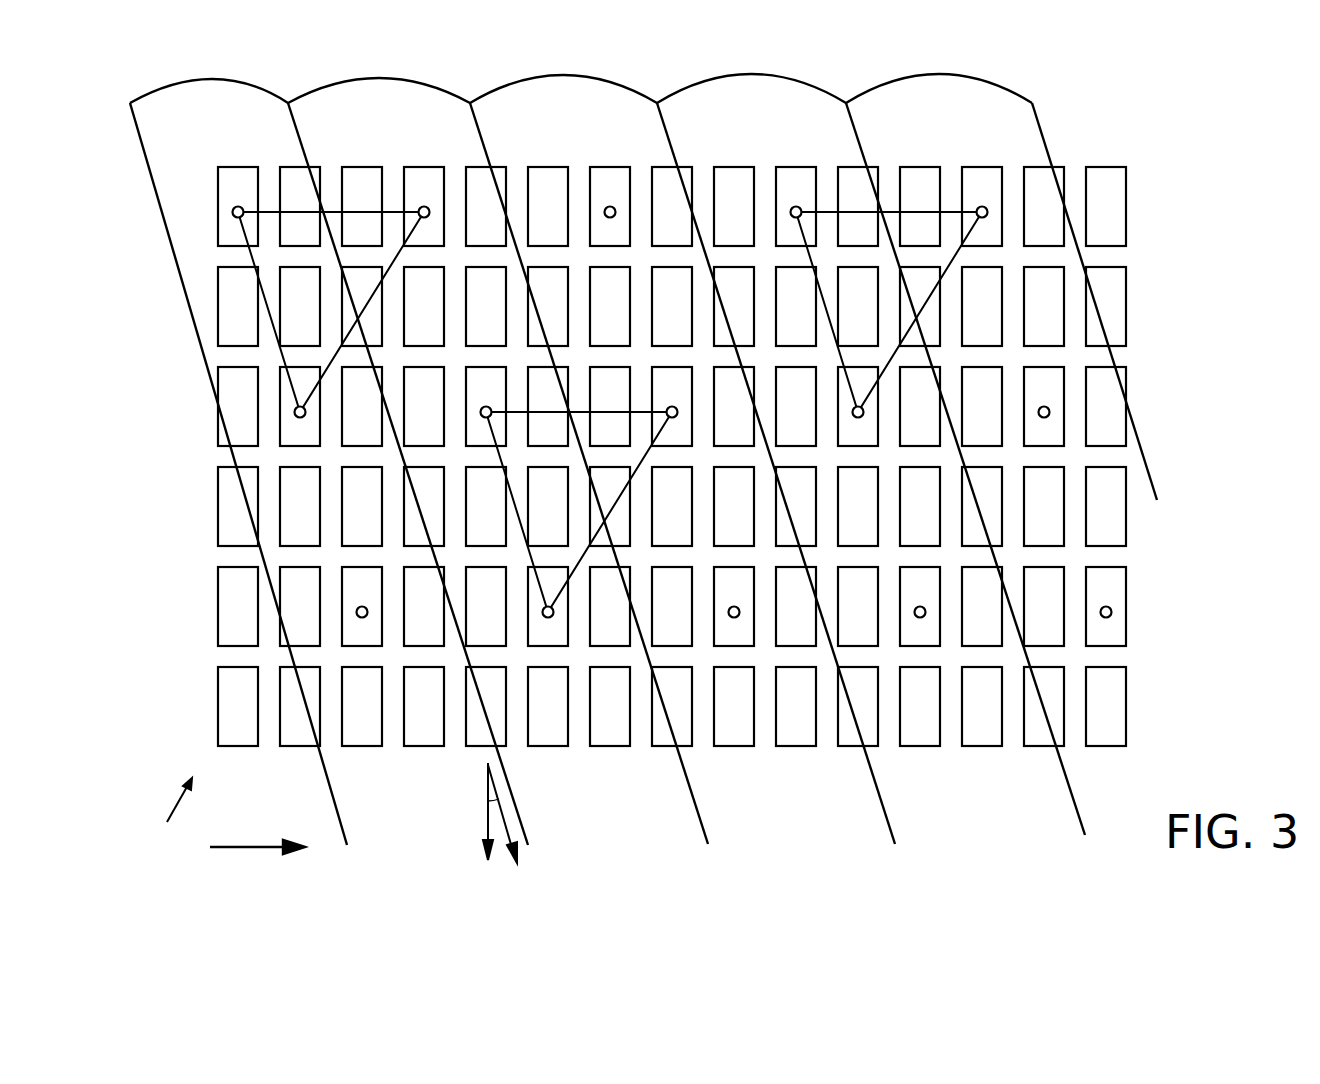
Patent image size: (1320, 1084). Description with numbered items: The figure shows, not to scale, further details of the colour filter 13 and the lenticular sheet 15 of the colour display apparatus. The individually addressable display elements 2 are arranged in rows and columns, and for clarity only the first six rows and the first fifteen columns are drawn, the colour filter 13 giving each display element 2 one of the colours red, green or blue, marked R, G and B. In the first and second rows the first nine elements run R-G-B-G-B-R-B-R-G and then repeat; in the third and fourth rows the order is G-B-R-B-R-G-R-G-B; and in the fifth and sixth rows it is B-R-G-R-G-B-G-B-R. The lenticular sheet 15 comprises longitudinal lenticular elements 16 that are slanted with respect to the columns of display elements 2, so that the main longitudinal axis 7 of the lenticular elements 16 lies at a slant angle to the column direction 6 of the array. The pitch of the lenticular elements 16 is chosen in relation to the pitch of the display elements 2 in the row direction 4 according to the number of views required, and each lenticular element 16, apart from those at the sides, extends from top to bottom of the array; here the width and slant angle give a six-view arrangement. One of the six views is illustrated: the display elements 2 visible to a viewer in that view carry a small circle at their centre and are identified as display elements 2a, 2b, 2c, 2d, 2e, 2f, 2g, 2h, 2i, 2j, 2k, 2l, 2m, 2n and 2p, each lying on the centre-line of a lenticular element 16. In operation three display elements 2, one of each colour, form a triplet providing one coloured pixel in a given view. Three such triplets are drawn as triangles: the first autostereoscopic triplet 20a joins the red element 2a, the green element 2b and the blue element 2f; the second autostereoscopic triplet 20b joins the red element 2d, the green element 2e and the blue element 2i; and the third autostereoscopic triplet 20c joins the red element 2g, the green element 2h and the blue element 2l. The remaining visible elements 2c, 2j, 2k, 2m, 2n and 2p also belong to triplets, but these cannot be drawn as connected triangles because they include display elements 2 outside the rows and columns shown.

The individually addressable display element 2 is at (218, 507).
The red individually addressable display element 2a is at (218, 176).
The green individually addressable display element 2b is at (422, 167).
The individually addressable display element 2c is at (610, 167).
The red individually addressable display element 2d is at (796, 167).
The green individually addressable display element 2e is at (982, 167).
The blue individually addressable display element 2f is at (289, 442).
The red individually addressable display element 2g is at (474, 442).
The green individually addressable display element 2h is at (660, 442).
The blue individually addressable display element 2i is at (848, 442).
The individually addressable display element 2j is at (1033, 442).
The individually addressable display element 2k is at (350, 642).
The blue individually addressable display element 2l is at (538, 642).
The individually addressable display element 2m is at (720, 642).
The individually addressable display element 2n is at (908, 642).
The individually addressable display element 2p is at (1094, 642).
The row direction 4 is at (246, 846).
The column direction 6 is at (487, 826).
The main longitudinal axis 7 is at (520, 822).
The colour filter 13 is at (169, 816).
The lenticular sheet 15 is at (1066, 112).
The lenticular element 16 is at (210, 82).
The first autostereoscopic triplet 20a is at (274, 210).
The second autostereoscopic triplet 20b is at (884, 210).
The third autostereoscopic triplet 20c is at (646, 466).